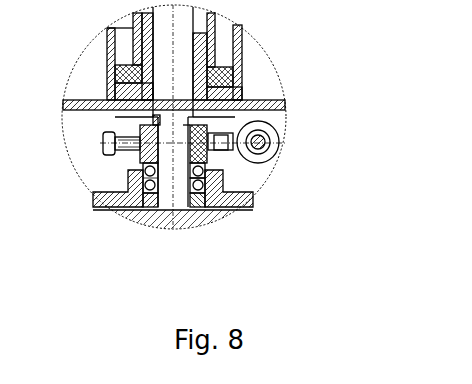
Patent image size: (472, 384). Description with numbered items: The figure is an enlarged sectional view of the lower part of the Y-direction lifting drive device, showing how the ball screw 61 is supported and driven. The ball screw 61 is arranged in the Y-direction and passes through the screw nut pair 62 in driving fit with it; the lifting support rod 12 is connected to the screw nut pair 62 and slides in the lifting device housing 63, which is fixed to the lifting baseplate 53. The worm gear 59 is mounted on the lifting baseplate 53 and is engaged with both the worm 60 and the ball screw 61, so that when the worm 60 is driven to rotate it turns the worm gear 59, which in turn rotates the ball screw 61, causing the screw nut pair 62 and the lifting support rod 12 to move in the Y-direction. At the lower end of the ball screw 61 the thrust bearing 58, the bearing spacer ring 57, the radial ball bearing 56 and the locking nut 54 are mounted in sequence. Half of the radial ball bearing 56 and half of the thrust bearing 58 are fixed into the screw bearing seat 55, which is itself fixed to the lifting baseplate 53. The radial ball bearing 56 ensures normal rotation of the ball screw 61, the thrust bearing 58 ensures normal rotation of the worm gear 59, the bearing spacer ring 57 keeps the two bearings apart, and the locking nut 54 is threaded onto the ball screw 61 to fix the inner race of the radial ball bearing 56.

The lifting support rod 12 is at (197, 37).
The lifting baseplate 53 is at (148, 218).
The locking nut 54 is at (198, 200).
The screw bearing seat 55 is at (218, 195).
The radial ball bearing 56 is at (212, 188).
The bearing spacer ring 57 is at (218, 185).
The thrust bearing 58 is at (215, 172).
The worm gear 59 is at (210, 155).
The worm 60 is at (268, 143).
The ball screw 61 is at (186, 120).
The screw nut pair 62 is at (212, 95).
The lifting device housing 63 is at (236, 63).